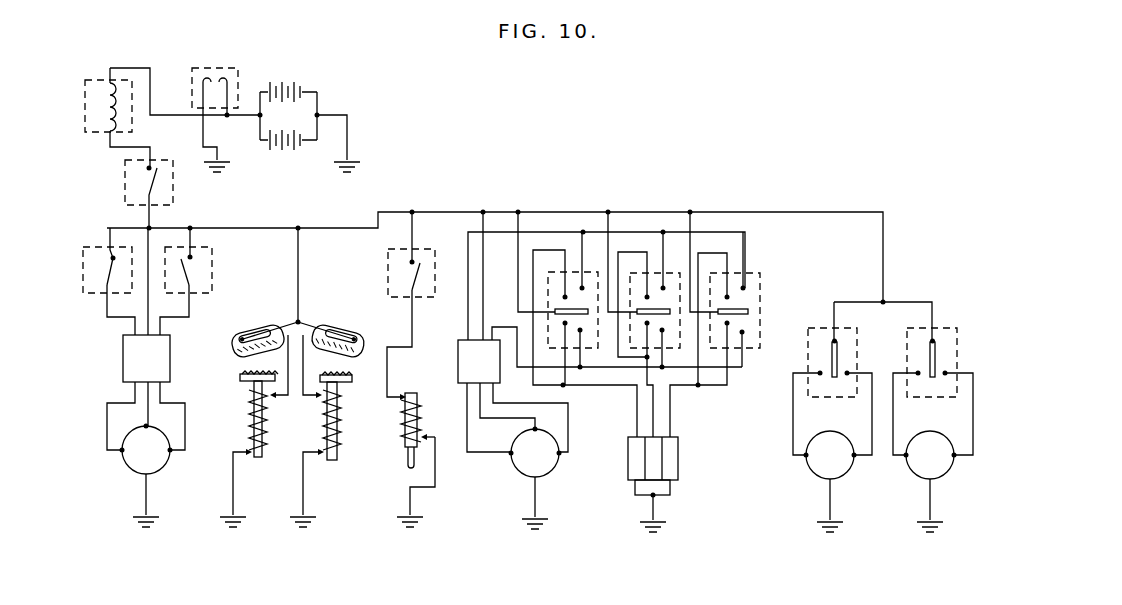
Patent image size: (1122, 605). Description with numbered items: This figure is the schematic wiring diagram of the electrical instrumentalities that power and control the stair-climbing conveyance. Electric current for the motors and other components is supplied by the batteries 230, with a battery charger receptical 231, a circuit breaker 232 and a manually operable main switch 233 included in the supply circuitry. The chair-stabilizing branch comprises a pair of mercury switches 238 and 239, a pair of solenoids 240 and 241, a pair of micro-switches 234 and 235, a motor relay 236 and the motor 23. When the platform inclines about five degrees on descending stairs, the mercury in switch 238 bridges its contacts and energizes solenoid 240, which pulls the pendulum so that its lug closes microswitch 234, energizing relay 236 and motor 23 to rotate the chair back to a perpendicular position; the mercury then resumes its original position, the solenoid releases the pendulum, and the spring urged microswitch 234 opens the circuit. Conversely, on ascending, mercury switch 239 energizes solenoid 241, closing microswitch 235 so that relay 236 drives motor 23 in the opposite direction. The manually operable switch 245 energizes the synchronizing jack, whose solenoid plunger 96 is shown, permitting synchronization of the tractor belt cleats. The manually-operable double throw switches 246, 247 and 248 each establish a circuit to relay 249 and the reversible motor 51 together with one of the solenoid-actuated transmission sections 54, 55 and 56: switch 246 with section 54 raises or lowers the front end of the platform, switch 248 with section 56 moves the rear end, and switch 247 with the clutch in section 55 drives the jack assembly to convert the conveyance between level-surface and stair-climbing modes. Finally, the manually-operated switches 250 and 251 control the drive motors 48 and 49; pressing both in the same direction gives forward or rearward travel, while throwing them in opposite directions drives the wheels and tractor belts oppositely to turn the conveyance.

The motor 23 is at (132, 463).
The motor 48 is at (817, 468).
The motor 49 is at (923, 468).
The reversible motor 51 is at (522, 465).
The transmission section 54 is at (632, 445).
The transmission section 55 is at (650, 460).
The transmission section 56 is at (673, 460).
The solenoid plunger 96 is at (405, 414).
The batteries 230 is at (278, 86).
The battery charger receptical 231 is at (200, 68).
The circuit breaker 232 is at (90, 80).
The main switch 233 is at (128, 182).
The micro-switch 234 is at (86, 252).
The micro-switch 235 is at (203, 250).
The motor relay 236 is at (130, 348).
The mercury switch 238 is at (237, 342).
The mercury switch 239 is at (362, 327).
The solenoid 240 is at (252, 403).
The solenoid 241 is at (334, 460).
The manually operable switch 245 is at (390, 262).
The double throw switch 246 is at (590, 273).
The double throw switch 247 is at (672, 273).
The double throw switch 248 is at (752, 273).
The relay 249 is at (465, 372).
The manually-operated switch 250 is at (818, 328).
The manually-operated switch 251 is at (950, 328).